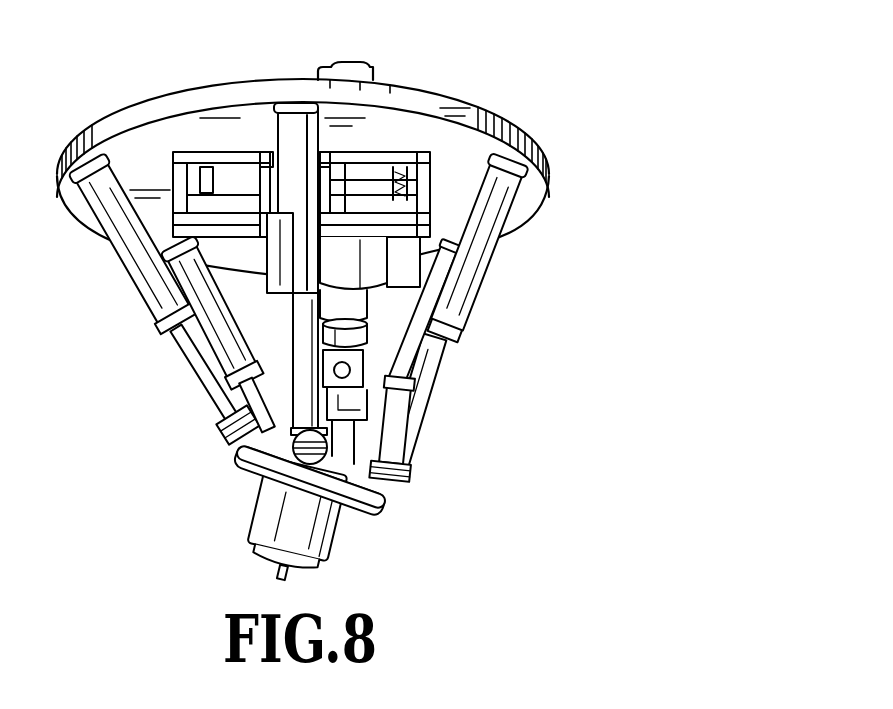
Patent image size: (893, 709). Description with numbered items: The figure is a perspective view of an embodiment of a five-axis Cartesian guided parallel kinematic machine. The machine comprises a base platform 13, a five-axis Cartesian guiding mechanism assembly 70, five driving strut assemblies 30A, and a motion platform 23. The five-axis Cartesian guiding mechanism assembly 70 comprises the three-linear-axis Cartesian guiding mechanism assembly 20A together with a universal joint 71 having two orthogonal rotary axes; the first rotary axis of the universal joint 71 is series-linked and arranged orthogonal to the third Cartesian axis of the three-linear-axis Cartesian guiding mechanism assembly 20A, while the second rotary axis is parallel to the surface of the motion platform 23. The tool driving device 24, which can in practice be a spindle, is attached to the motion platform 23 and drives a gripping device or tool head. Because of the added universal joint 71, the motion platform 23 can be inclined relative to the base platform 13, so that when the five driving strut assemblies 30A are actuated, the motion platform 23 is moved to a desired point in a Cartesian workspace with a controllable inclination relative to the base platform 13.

The base platform 13 is at (470, 117).
The five-axis Cartesian guiding mechanism assembly 70 is at (346, 205).
The driving strut assembly 30A is at (483, 277).
The three-linear-axis Cartesian guiding mechanism assembly 20A is at (384, 316).
The universal joint 71 is at (375, 366).
The motion platform 23 is at (223, 426).
The tool driving device 24 is at (273, 498).